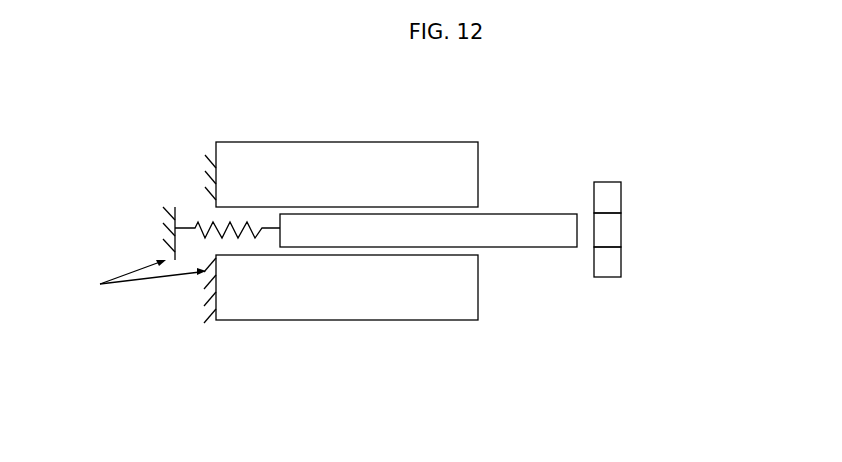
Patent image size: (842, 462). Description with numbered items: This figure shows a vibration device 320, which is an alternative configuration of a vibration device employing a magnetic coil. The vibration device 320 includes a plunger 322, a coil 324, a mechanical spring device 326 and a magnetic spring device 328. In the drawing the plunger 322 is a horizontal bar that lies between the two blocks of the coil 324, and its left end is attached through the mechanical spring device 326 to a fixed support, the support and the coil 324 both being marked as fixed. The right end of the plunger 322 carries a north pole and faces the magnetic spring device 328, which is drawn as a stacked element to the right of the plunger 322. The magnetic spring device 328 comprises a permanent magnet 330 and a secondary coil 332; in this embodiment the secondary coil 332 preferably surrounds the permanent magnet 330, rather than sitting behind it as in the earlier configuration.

The vibration device 320 is at (535, 86).
The plunger 322 is at (511, 213).
The coil 324 is at (334, 142).
The mechanical spring device 326 is at (196, 220).
The magnetic spring device 328 is at (657, 211).
The permanent magnet 330 is at (621, 235).
The secondary coil 332 is at (621, 199).